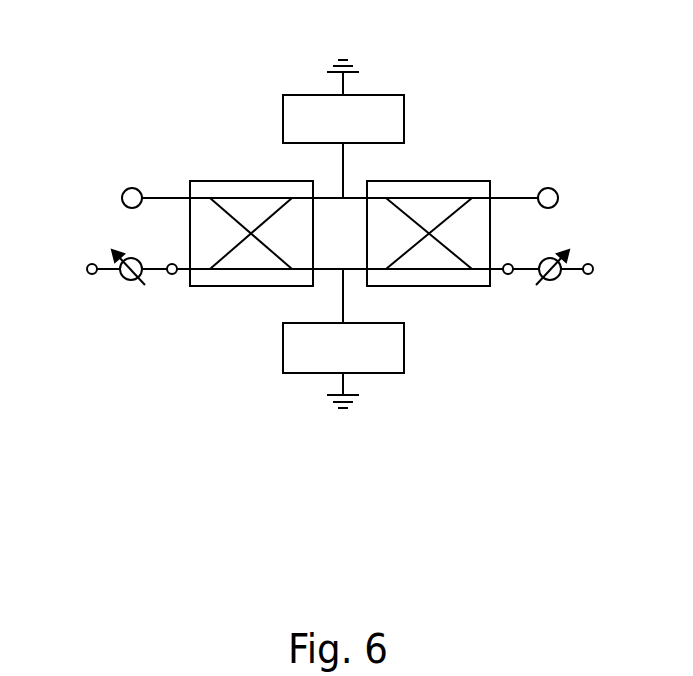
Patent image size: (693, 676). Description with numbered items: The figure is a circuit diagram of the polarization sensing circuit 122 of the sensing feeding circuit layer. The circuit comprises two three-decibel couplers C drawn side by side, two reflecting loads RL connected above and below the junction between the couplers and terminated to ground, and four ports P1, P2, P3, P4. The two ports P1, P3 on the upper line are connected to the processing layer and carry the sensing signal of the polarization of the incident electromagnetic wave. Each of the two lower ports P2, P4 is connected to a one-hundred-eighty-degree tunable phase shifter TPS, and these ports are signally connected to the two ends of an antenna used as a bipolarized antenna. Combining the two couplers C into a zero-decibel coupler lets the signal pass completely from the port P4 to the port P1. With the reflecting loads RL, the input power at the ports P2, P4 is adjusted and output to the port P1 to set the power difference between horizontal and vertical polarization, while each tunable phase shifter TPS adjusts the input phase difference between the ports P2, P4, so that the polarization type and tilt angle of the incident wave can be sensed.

The polarization sensing circuit 122 is at (88, 50).
The 3 dB coupler C is at (217, 181).
The reflecting load RL is at (343, 234).
The port P1 is at (133, 177).
The port P2 is at (127, 292).
The port P3 is at (543, 177).
The port P4 is at (555, 292).
The 180-degree tunable phase shifter TPS is at (131, 283).